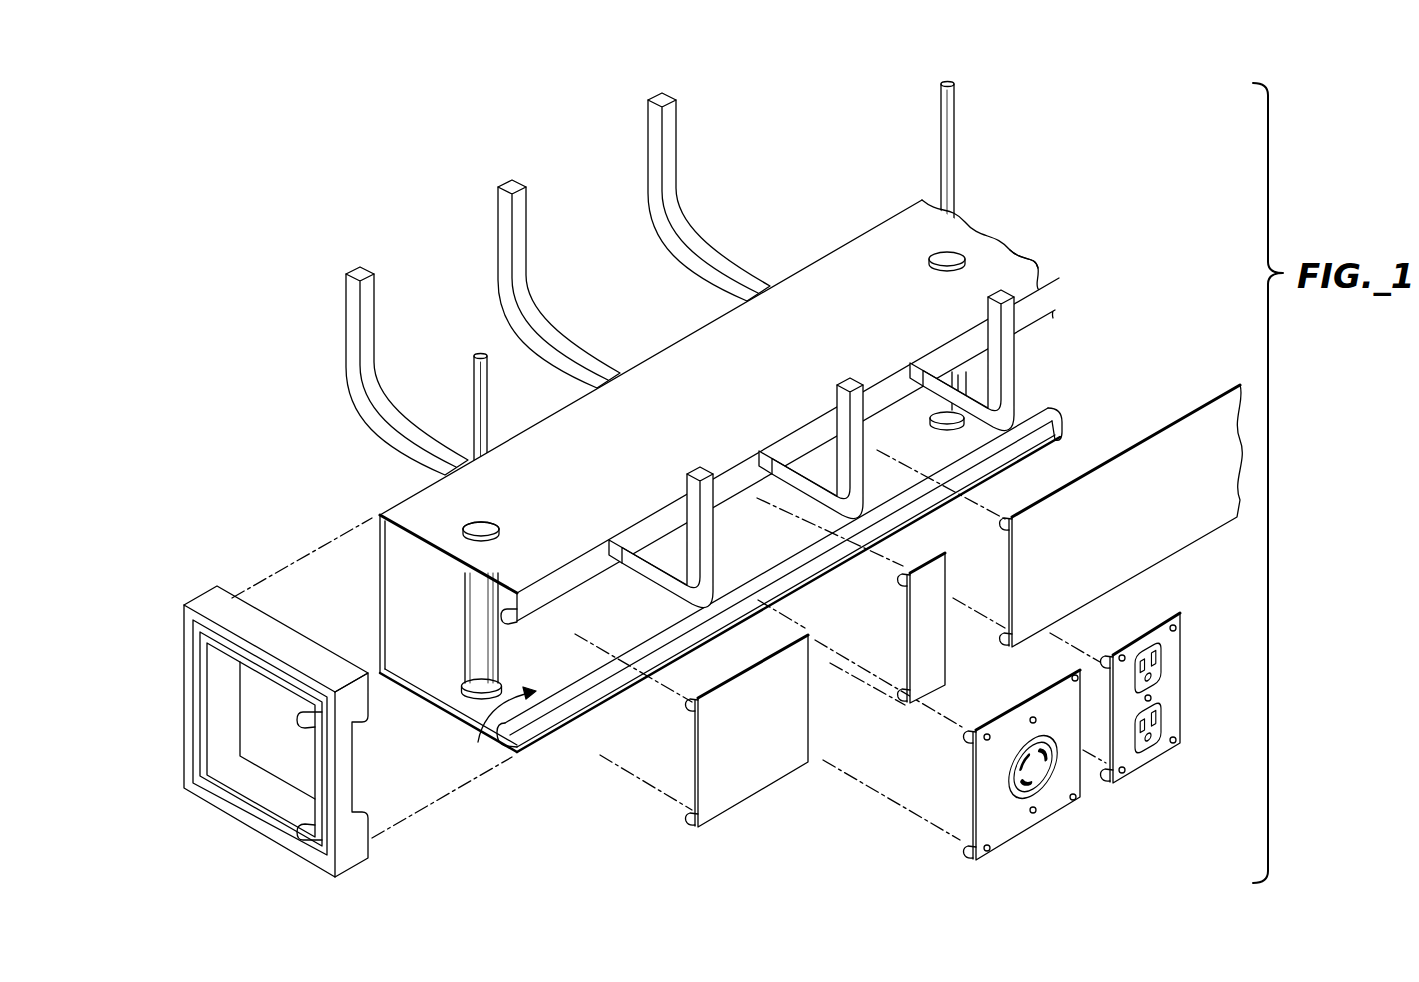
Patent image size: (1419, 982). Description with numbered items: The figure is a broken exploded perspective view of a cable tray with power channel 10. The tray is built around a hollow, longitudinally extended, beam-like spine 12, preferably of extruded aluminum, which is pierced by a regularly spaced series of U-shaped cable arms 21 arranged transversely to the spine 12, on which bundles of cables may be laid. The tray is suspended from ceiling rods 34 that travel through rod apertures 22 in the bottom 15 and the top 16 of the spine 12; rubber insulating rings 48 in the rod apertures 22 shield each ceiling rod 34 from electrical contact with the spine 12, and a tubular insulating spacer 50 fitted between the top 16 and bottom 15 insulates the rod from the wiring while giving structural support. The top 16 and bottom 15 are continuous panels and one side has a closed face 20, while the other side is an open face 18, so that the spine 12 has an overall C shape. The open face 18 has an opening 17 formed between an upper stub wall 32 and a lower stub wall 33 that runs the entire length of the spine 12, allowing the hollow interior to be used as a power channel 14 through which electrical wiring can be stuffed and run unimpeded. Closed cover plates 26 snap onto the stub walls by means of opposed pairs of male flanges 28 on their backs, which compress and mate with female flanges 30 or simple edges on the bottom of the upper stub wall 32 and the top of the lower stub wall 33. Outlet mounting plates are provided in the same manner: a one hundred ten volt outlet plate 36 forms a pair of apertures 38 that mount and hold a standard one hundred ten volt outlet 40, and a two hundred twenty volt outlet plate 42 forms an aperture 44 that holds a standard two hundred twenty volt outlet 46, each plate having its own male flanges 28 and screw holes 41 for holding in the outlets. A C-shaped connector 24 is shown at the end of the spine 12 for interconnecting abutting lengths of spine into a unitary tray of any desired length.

The cable tray with power channel 10 is at (816, 124).
The spine 12 is at (716, 480).
The power channel 14 is at (493, 737).
The bottom 15 is at (433, 707).
The top 16 is at (848, 258).
The opening 17 is at (1040, 382).
The open face 18 is at (1047, 300).
The closed face 20 is at (378, 602).
The cable arms 21 is at (1017, 336).
The rod apertures 22 is at (493, 543).
The C-shaped connector 24 is at (270, 842).
The cover plates 26 is at (762, 773).
The male flanges 28 is at (687, 713).
The female flanges 30 is at (503, 623).
The upper stub wall 32 is at (1038, 270).
The lower stub wall 33 is at (1047, 438).
The ceiling rods 34 is at (940, 140).
The 110 V outlet plate 36 is at (1173, 645).
The apertures 38 is at (1153, 680).
The 110 V outlet 40 is at (1167, 673).
The screw holes 41 is at (1033, 718).
The 220 V outlet plate 42 is at (1013, 818).
The aperture 44 is at (993, 771).
The 220 V outlet 46 is at (1012, 787).
The insulating rings 48 is at (490, 520).
The tubular insulating spacer 50 is at (477, 618).